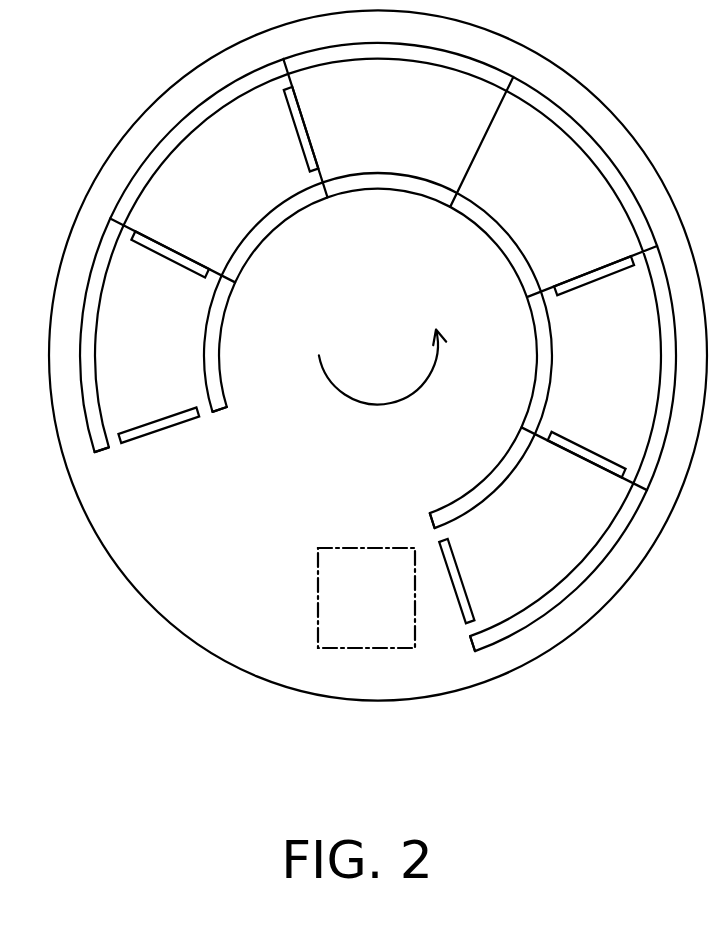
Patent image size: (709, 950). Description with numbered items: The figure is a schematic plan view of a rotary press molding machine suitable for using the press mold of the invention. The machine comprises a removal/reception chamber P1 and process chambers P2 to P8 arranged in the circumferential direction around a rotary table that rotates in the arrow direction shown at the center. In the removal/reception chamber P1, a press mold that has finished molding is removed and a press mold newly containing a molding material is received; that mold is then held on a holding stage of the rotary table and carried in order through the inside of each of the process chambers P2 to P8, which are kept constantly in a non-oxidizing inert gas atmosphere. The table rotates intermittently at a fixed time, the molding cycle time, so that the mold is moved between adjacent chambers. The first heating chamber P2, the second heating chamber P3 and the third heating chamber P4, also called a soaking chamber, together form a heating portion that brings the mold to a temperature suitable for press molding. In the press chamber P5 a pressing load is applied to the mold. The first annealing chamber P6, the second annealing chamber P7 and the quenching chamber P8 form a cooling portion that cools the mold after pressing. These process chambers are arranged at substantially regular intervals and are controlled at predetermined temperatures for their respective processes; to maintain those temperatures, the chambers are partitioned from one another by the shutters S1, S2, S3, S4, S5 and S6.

The removal/reception chamber P1 is at (366, 598).
The first heating chamber P2 is at (538, 539).
The second heating chamber P3 is at (599, 368).
The third heating chamber P4 is at (553, 187).
The press chamber P5 is at (398, 125).
The first annealing chamber P6 is at (218, 170).
The second annealing chamber P7 is at (157, 336).
The quenching chamber P8 is at (285, 529).
The shutter S1 is at (470, 598).
The shutter S2 is at (620, 462).
The shutter S3 is at (602, 258).
The shutter S4 is at (300, 150).
The shutter S5 is at (190, 272).
The shutter S6 is at (205, 447).